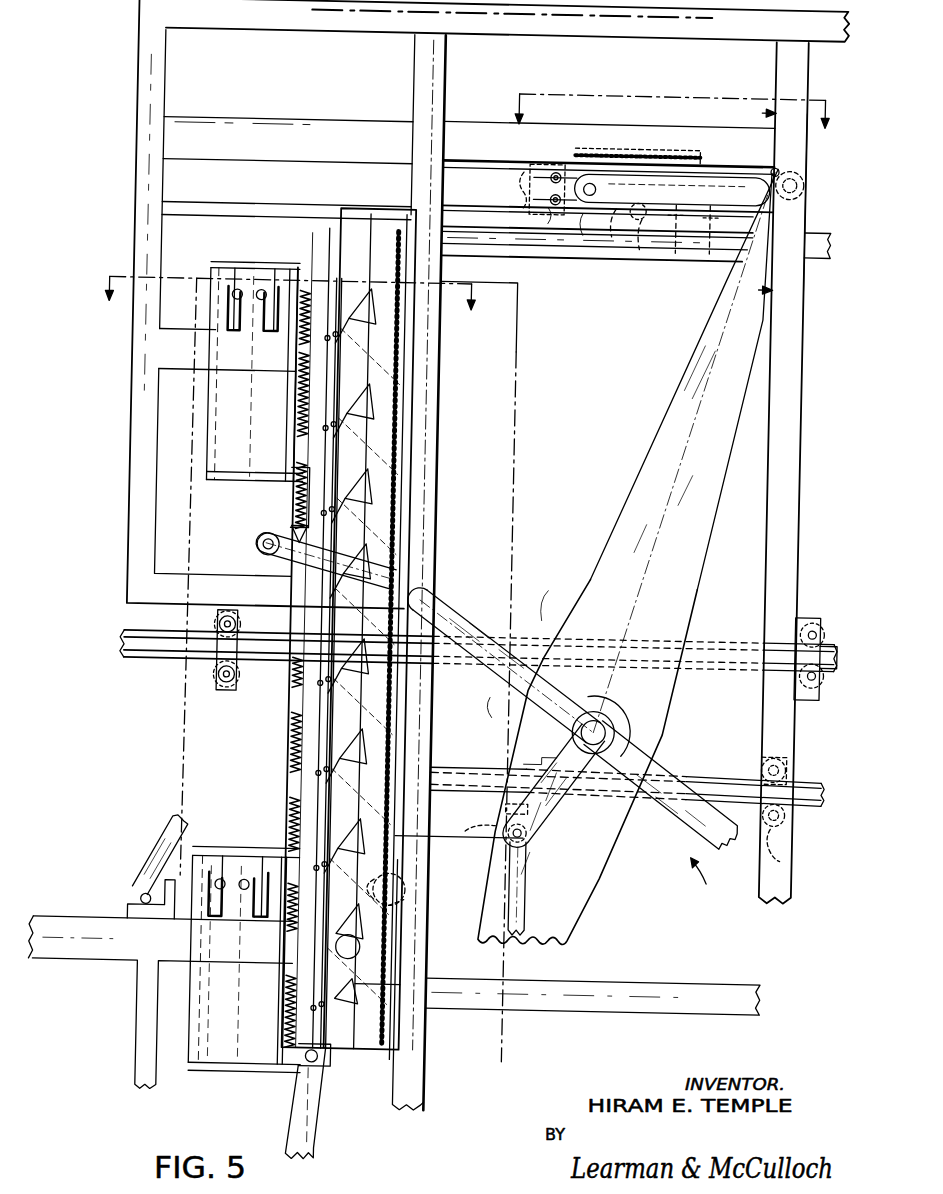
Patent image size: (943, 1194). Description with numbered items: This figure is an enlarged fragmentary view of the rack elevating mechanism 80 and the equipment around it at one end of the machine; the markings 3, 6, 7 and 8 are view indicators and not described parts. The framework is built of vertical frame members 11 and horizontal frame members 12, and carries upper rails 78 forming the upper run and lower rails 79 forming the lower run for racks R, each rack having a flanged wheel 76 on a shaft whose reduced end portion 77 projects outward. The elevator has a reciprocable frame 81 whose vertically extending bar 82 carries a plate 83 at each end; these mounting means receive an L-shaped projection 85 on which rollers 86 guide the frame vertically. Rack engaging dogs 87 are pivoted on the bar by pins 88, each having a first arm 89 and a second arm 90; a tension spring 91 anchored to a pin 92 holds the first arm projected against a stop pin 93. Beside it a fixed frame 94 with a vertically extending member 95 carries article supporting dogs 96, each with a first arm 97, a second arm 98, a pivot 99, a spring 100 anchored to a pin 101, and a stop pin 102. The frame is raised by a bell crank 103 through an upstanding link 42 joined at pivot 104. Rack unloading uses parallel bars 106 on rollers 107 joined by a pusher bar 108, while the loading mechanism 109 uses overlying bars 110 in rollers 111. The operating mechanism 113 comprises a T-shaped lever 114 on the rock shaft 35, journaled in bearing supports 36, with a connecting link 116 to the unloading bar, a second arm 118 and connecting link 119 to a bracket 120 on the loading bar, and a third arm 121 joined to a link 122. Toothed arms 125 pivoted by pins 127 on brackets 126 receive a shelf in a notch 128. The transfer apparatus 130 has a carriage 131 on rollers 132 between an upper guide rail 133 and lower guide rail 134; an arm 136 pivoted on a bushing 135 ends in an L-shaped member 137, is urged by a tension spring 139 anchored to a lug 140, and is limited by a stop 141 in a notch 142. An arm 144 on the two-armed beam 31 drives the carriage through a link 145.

The lever lower portion 3 is at (604, 887).
The section line 6- 6 is at (287, 308).
The section line 7- 7 is at (670, 125).
The section line 8- 8 is at (774, 202).
The vertical frame members 11 is at (124, 411).
The horizontal frame members 12 is at (520, 28).
The two-armed beam 31 is at (686, 708).
The rock shaft 35 is at (606, 712).
The bearing supports 36 is at (635, 717).
The upstanding link 42 is at (326, 1136).
The flanged wheel 76 is at (381, 985).
The reduced end portion 77 is at (344, 986).
The upper horizontal rails 78 is at (470, 210).
The lower horizontal rails 79 is at (464, 984).
The rack elevating mechanism 80 is at (165, 738).
The reciprocable frame 81 is at (283, 750).
The vertically extending bar 82 is at (292, 790).
The plate 83 is at (226, 269).
The L-shaped projection 85 is at (270, 269).
The rollers 86 is at (298, 268).
The rack engaging dogs 87 is at (340, 1004).
The pin 88 is at (342, 567).
The first arm 89 is at (352, 500).
The second arm 90 is at (296, 523).
The tension spring 91 is at (296, 503).
The pin 92 is at (322, 663).
The stop pin 93 is at (349, 411).
The fixed frame 94 is at (434, 706).
The vertically extending member 95 is at (343, 671).
The article supporting dogs 96 is at (372, 229).
The first arm 97 is at (352, 796).
The second arm 98 is at (459, 832).
The pivot 99 is at (364, 952).
The spring 100 is at (412, 892).
The pin 101 is at (412, 874).
The stop pin 102 is at (412, 909).
The bell crank 103 is at (294, 1120).
The pivot 104 is at (358, 1056).
The parallel bars 106 is at (808, 792).
The rollers 107 is at (788, 758).
The pusher bar or plate 108 is at (550, 818).
The rack loading mechanism 109 is at (543, 620).
The bars 110 is at (712, 635).
The rollers 111 is at (240, 682).
The rack loading and unloading operating mechanism 113 is at (704, 881).
The T-shaped lever 114 is at (578, 690).
The connecting link 116 is at (706, 830).
The second arm 118 is at (473, 713).
The connecting link 119 is at (259, 573).
The bracket 120 is at (258, 549).
The third arm 121 is at (564, 806).
The link 122 is at (532, 888).
The toothed arms 125 is at (154, 852).
The brackets 126 is at (136, 920).
The pivot pins 127 is at (142, 904).
The notch 128 is at (226, 770).
The transfer apparatus 130 is at (700, 152).
The carriage member 131 is at (540, 231).
The rollers 132 is at (526, 186).
The upper guide rail 133 is at (279, 133).
The lower guide rail 134 is at (268, 207).
The bushing 135 is at (560, 178).
The arm 136 is at (674, 239).
The L-shaped member 137 is at (711, 240).
The tension spring 139 is at (632, 137).
The lug 140 is at (684, 136).
The stop 141 is at (604, 234).
The notch 142 is at (639, 238).
The arm 144 is at (622, 504).
The link 145 is at (576, 230).
The racks R is at (513, 407).